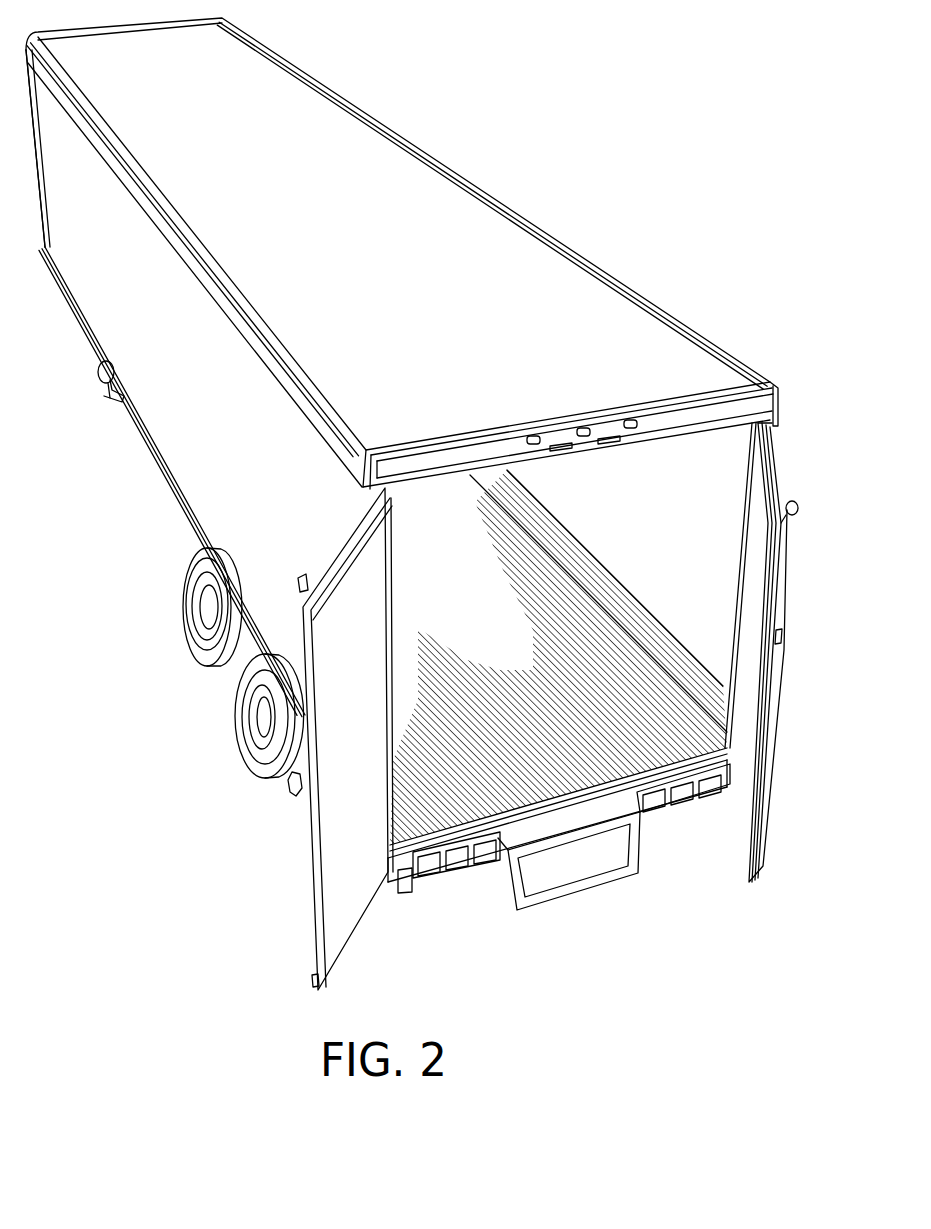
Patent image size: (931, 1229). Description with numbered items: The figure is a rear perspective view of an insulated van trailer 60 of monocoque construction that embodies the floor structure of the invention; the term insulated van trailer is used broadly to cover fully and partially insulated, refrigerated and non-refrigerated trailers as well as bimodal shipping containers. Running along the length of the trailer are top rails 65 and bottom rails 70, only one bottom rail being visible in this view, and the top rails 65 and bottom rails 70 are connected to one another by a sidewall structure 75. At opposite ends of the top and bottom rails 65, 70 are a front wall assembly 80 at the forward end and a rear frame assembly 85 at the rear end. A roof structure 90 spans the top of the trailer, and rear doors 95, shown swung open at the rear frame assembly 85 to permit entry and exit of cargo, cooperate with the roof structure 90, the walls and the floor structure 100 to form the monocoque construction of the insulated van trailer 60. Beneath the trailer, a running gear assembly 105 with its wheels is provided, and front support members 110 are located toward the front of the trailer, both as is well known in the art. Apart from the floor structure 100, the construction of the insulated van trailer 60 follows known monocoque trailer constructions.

The insulated van trailer 60 is at (556, 216).
The top rails 65 is at (632, 286).
The bottom rails 70 is at (176, 482).
The sidewall structure 75 is at (158, 384).
The front wall assembly 80 is at (30, 118).
The rear frame assembly 85 is at (781, 392).
The roof structure 90 is at (275, 115).
The rear doors 95 is at (312, 840).
The floor structure 100 is at (637, 812).
The running gear assembly 105 is at (220, 683).
The front support members 110 is at (104, 358).